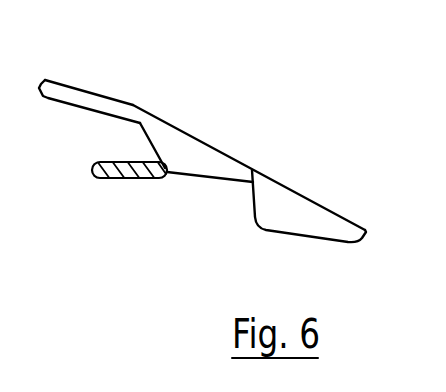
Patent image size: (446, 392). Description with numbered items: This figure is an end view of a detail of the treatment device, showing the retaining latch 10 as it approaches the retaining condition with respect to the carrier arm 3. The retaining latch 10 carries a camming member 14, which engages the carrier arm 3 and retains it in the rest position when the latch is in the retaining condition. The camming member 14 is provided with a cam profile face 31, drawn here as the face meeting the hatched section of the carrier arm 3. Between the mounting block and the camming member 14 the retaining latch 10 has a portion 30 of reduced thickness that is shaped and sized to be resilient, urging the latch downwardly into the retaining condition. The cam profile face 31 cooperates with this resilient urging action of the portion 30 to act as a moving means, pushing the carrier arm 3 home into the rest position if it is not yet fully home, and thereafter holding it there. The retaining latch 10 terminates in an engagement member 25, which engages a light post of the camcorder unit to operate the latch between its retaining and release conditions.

The retaining latch 10 is at (80, 89).
The resilient portion 30 is at (107, 97).
The camming member 14 is at (177, 138).
The cam profile face 31 is at (147, 140).
The carrier arm 3 is at (100, 180).
The engagement member 25 is at (285, 214).